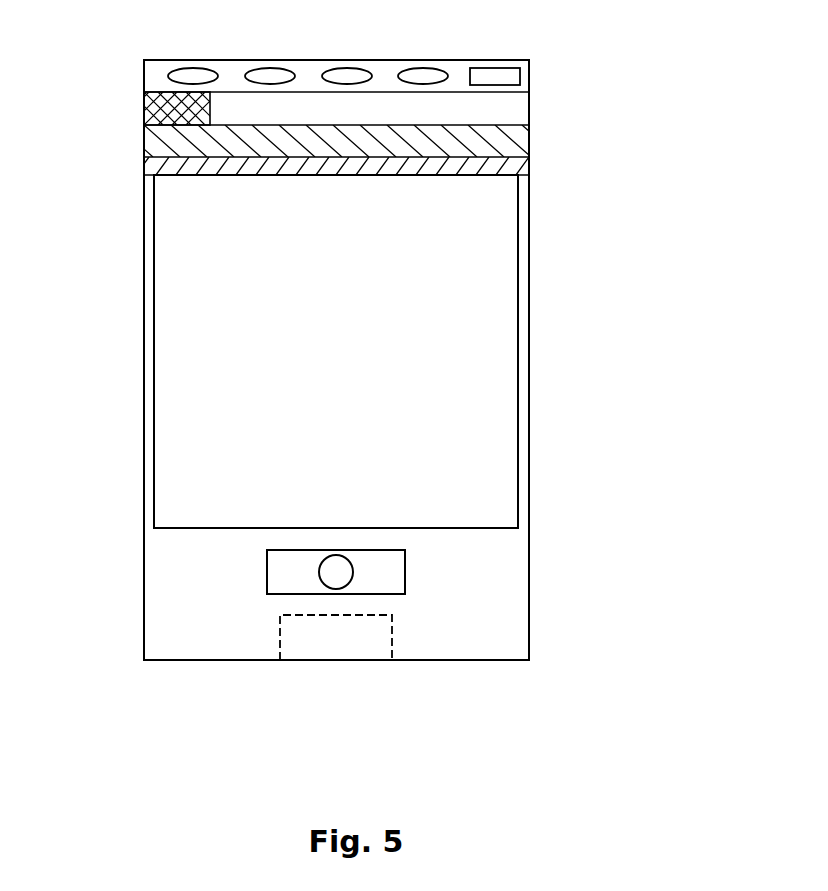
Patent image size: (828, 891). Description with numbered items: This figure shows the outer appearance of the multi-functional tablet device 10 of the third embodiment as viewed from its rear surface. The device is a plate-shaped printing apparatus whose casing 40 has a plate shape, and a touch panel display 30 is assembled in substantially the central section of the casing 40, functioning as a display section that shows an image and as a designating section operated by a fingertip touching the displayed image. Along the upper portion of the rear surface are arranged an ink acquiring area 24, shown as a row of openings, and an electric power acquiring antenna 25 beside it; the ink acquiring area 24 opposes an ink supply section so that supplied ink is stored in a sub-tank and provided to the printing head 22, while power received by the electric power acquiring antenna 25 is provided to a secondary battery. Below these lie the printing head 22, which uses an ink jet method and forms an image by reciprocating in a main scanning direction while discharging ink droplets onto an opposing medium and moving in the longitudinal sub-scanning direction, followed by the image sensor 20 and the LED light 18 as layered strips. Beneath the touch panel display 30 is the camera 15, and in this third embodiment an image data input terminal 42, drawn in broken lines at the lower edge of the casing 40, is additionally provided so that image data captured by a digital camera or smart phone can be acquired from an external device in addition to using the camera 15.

The multi-functional tablet device 10 is at (634, 278).
The camera 15 is at (250, 574).
The LED light 18 is at (130, 169).
The image sensor 20 is at (130, 138).
The printing head 22 is at (130, 101).
The ink acquiring area 24 is at (167, 53).
The electric power acquiring antenna 25 is at (497, 77).
The touch panel display 30 is at (172, 331).
The casing 40 is at (502, 643).
The image data input terminal 42 is at (299, 672).